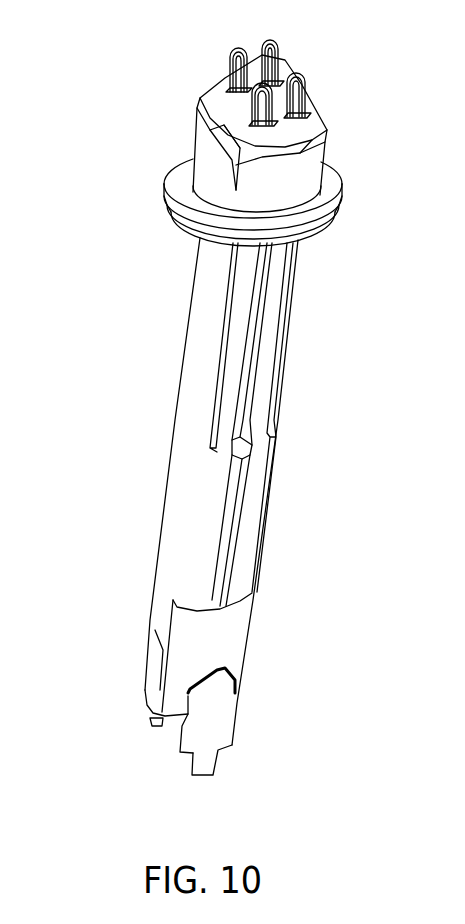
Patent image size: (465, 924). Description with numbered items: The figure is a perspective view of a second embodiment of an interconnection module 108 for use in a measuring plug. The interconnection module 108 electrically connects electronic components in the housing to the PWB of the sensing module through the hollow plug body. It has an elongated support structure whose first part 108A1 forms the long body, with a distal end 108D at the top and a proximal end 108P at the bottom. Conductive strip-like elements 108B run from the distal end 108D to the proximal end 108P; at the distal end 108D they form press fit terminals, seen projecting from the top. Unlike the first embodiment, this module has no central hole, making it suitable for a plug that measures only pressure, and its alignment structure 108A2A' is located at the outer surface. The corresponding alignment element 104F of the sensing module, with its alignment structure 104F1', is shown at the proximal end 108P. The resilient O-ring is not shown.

The interconnection module 108 is at (230, 407).
The distal end 108D is at (180, 110).
The conductive strip-like elements 108B is at (303, 87).
The first part of the elongated support structure 108A1 is at (192, 412).
The proximal end 108P is at (225, 638).
The alignment structure 108A2A' is at (294, 690).
The alignment structure of the alignment element 104F1' is at (305, 724).
The alignment element 104F is at (212, 722).